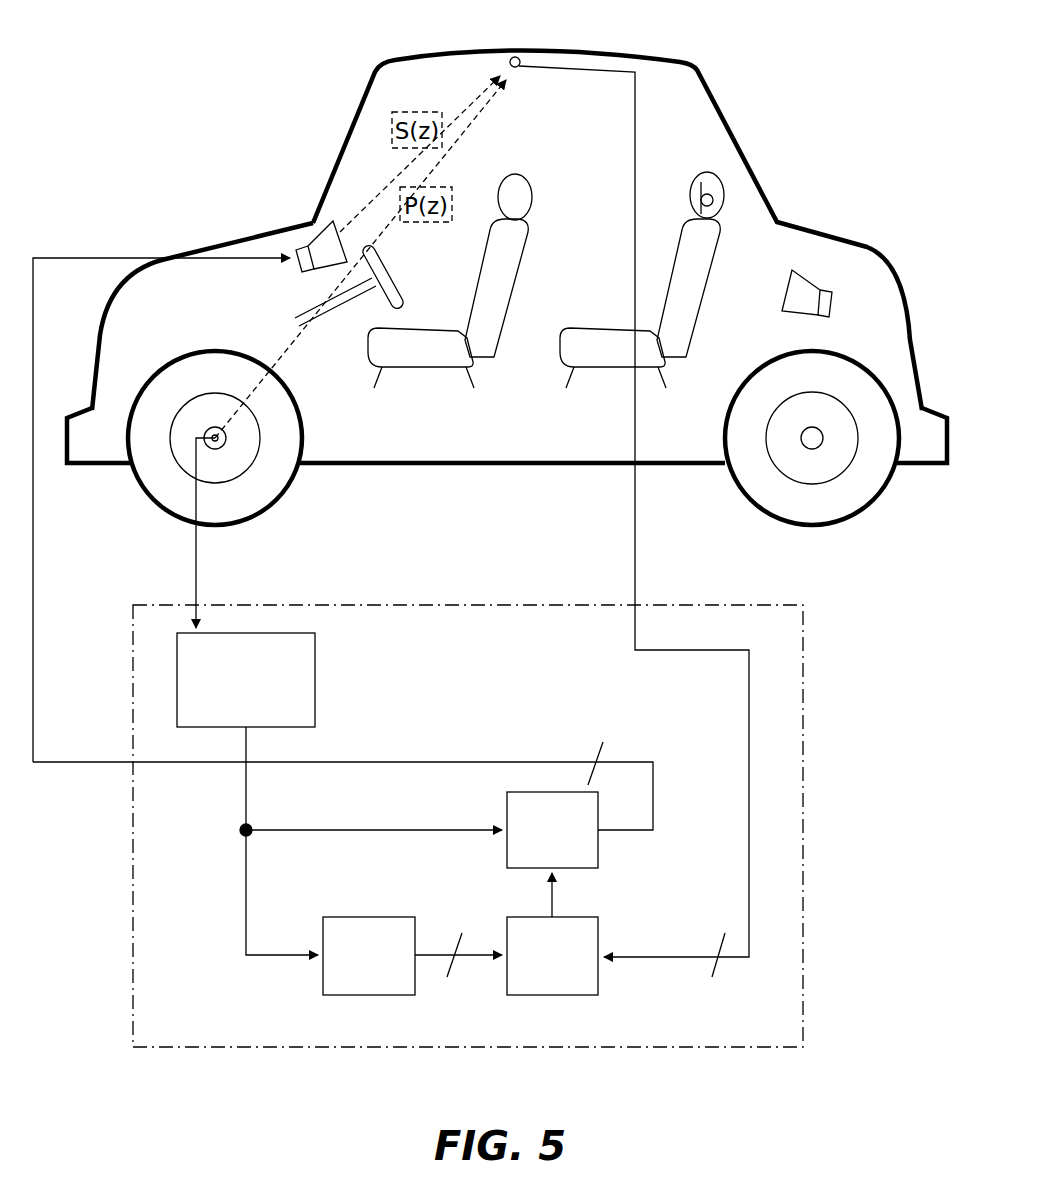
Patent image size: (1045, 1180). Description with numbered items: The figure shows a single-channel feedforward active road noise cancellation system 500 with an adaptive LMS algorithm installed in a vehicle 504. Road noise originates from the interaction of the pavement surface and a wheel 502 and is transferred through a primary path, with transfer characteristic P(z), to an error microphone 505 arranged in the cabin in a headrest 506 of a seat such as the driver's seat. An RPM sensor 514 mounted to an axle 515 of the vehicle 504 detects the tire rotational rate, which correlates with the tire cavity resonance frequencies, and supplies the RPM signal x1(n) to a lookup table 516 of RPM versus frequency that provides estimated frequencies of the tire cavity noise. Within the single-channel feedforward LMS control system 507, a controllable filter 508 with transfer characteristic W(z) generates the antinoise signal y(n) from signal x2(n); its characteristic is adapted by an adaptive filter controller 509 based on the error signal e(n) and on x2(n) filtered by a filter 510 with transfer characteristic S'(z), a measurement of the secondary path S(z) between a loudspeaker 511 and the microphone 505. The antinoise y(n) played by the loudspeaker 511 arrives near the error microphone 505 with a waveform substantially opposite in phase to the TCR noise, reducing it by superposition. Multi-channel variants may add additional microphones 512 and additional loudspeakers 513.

The single-channel feedforward active road noise cancellation system 500 is at (162, 60).
The wheel 502 is at (248, 495).
The vehicle 504 is at (700, 452).
The error microphone 505 is at (517, 68).
The headrest 506 is at (532, 197).
The single-channel feedforward LMS control system 507 is at (803, 755).
The controllable filter 508 is at (598, 855).
The adaptive filter controller 509 is at (738, 933).
The filter 510 is at (323, 978).
The loudspeaker 511 is at (340, 227).
The additional microphones 512 is at (712, 197).
The additional loudspeakers 513 is at (805, 285).
The RPM sensor 514 is at (226, 422).
The axle 515 is at (130, 373).
The lookup table 516 is at (359, 702).